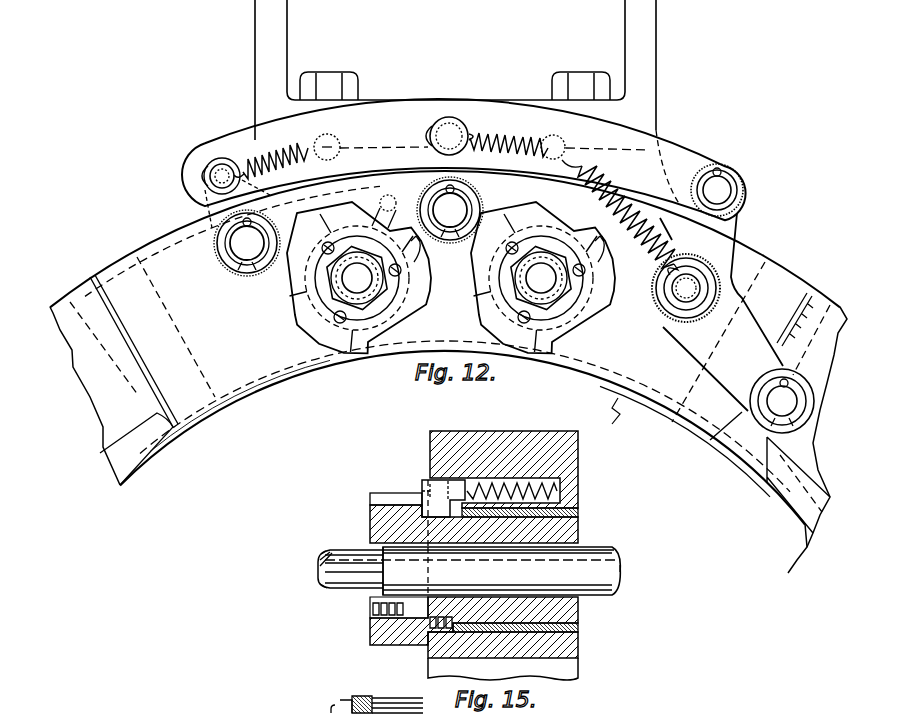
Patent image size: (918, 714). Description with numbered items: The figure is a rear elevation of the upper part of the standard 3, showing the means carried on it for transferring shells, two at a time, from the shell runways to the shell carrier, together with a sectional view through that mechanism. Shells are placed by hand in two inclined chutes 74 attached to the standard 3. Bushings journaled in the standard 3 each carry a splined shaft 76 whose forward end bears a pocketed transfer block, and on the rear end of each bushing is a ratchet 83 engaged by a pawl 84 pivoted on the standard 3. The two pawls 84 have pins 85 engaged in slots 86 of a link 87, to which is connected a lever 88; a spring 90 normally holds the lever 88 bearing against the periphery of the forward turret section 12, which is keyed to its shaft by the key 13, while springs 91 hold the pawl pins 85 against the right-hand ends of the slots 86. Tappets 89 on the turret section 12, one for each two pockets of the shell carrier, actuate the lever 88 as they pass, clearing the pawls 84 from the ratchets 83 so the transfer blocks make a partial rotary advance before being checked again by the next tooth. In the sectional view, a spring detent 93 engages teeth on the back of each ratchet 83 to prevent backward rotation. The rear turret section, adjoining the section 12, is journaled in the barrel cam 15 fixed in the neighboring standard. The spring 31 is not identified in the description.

In FIG. 12, the standard 3 is at (785, 282).
In FIG. 15, the standard 3 is at (570, 460).
In FIG. 12, the forward turret section 12 is at (655, 410).
In FIG. 12, the key 13 is at (305, 130).
In FIG. 12, the barrel cam 15 is at (418, 213).
In FIG. 12, the tension spring 31 is at (287, 153).
In FIG. 15, the inclined chute 74 is at (576, 528).
In FIG. 12, the shaft 76 is at (562, 318).
In FIG. 15, the shaft 76 is at (469, 537).
In FIG. 12, the ratchet 83 is at (478, 288).
In FIG. 15, the ratchet 83 is at (372, 516).
In FIG. 12, the pawl 84 is at (361, 226).
In FIG. 12, the pin 85 is at (210, 192).
In FIG. 12, the slot 86 is at (205, 181).
In FIG. 12, the link 87 is at (464, 159).
In FIG. 12, the lever 88 is at (728, 238).
In FIG. 12, the tappet 89 is at (762, 454).
In FIG. 12, the spring 90 is at (641, 241).
In FIG. 12, the spring 91 is at (517, 135).
In FIG. 15, the spring detent 93 is at (427, 482).